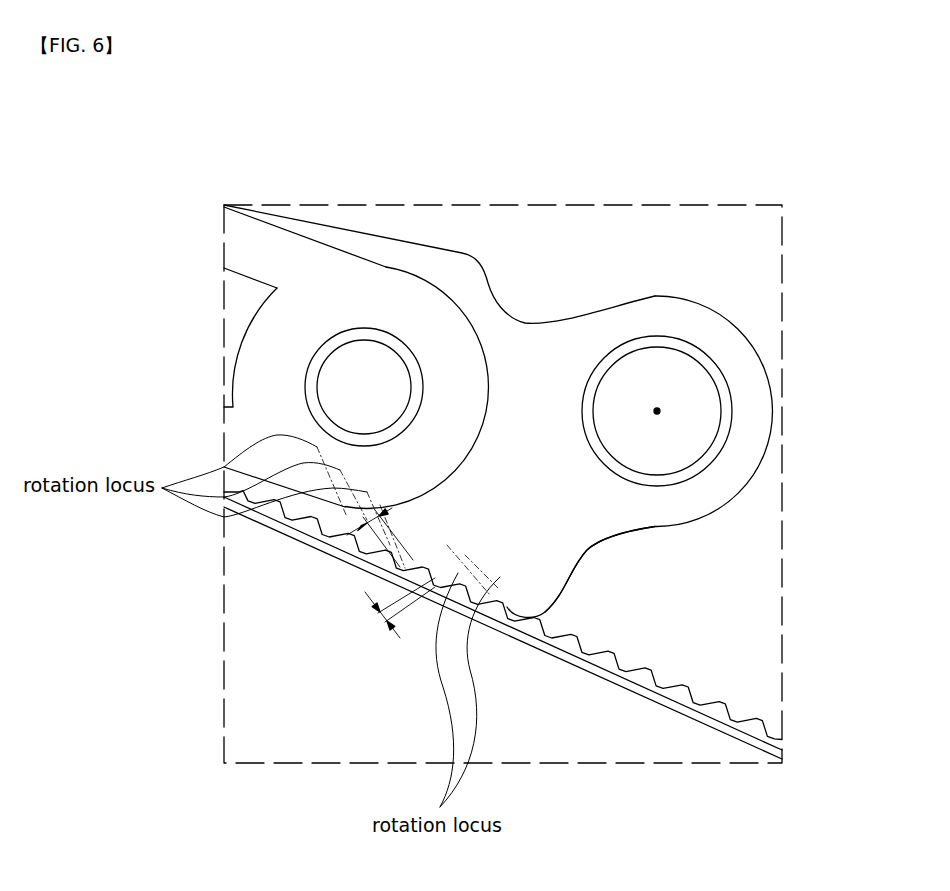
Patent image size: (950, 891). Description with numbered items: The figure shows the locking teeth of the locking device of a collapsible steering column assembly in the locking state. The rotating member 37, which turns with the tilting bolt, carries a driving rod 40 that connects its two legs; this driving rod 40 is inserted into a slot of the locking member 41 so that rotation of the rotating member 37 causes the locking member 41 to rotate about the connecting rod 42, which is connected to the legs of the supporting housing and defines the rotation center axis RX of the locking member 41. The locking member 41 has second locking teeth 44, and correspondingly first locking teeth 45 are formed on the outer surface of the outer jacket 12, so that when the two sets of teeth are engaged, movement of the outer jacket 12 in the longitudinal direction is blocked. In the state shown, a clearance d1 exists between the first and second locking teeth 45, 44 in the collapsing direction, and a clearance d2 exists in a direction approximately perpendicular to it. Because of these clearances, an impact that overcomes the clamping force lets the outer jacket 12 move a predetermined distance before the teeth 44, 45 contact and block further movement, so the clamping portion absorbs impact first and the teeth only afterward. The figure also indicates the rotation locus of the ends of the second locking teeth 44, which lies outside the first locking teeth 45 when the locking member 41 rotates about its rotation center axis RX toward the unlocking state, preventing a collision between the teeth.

The rotating member 37 is at (300, 253).
The driving rod 40 is at (377, 363).
The locking member 41 is at (592, 327).
The connecting rod 42 is at (680, 370).
The rotation center axis RX is at (657, 411).
The second locking teeth 44 is at (497, 605).
The first locking teeth 45 is at (637, 665).
The outer jacket 12 is at (663, 702).
The clearance in a collapsing direction d1 is at (400, 621).
The clearance in a direction perpendicular to the collapsing direction d2 is at (384, 525).